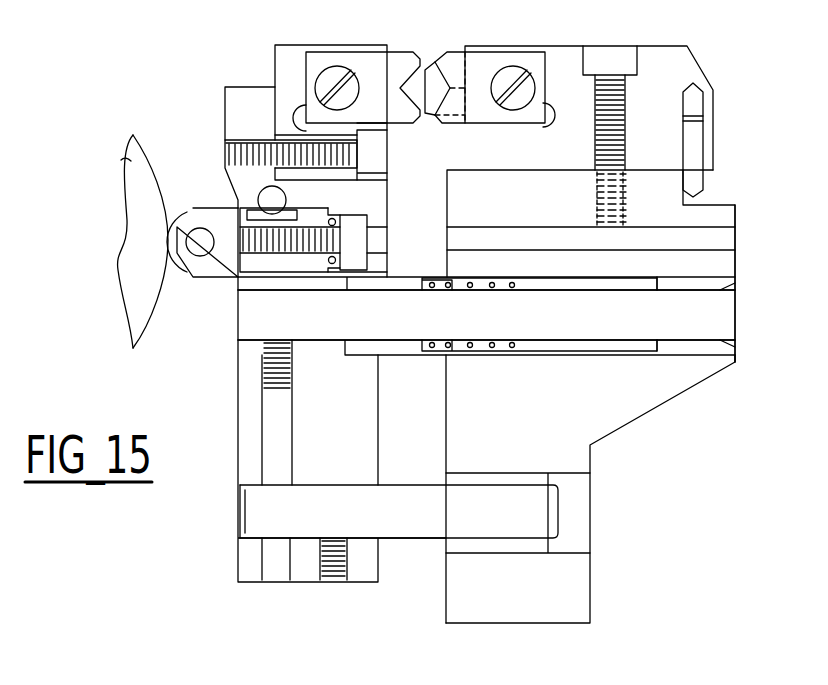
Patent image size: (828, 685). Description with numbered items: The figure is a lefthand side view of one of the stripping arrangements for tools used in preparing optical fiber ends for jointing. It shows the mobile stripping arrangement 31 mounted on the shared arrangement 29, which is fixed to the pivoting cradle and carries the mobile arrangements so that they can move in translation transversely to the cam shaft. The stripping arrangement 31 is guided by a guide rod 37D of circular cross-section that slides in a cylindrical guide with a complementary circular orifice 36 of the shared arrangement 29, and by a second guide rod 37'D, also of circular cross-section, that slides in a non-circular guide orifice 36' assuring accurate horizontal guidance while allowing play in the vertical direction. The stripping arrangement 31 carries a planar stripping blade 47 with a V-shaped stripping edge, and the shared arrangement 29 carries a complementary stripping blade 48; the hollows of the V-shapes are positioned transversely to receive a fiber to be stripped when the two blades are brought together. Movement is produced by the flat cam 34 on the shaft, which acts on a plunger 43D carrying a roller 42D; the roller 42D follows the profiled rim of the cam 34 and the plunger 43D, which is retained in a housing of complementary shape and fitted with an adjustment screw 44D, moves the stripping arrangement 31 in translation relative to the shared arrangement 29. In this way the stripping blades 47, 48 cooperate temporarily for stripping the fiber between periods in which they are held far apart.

The flat cam 34 is at (130, 160).
The plunger 43D is at (220, 218).
The roller 42D is at (183, 273).
The adjustment screw 44D is at (303, 257).
The stripping blade 47 is at (390, 62).
The stripping blade 48 is at (482, 70).
The guide rod 37D is at (718, 302).
The cylindrical guide orifice 36 is at (712, 309).
The shared arrangement 29 is at (642, 402).
The non-circular guide orifice 36' is at (554, 510).
The guide rod 37'D is at (463, 514).
The mobile stripping arrangement 31 is at (237, 477).